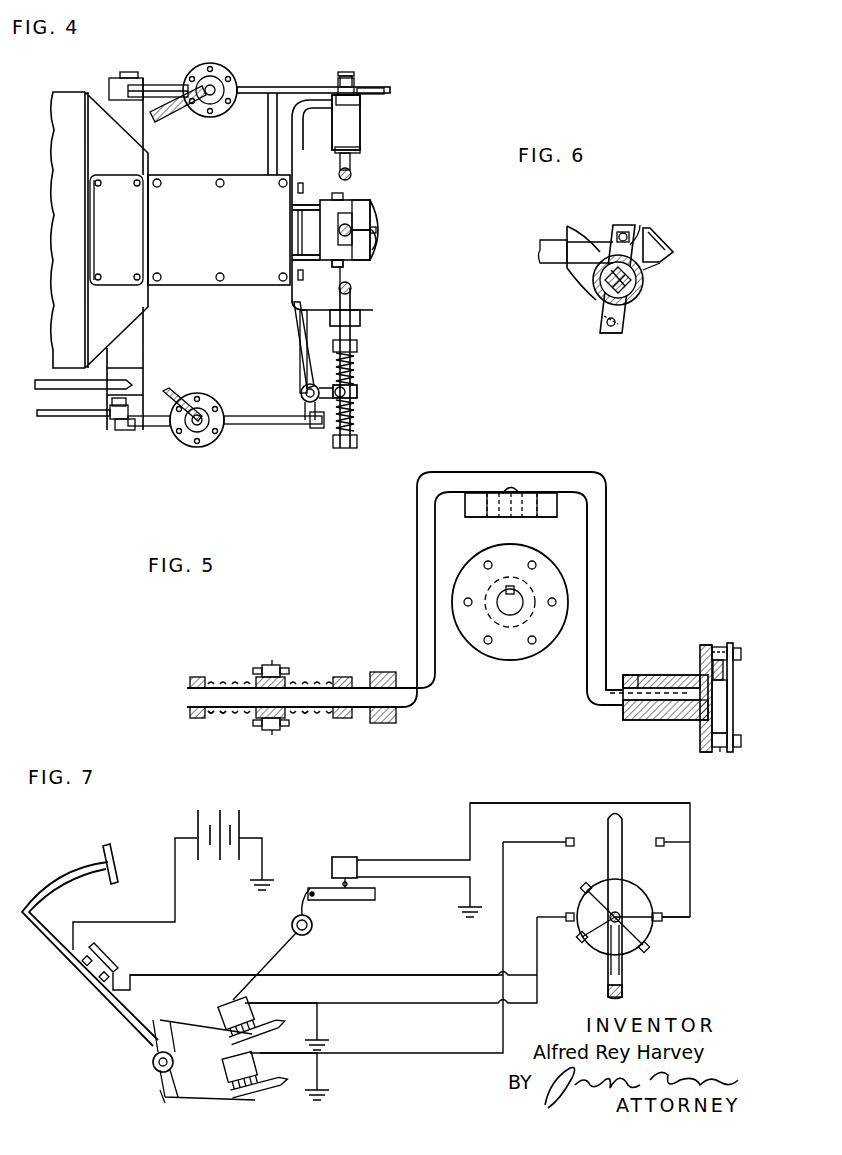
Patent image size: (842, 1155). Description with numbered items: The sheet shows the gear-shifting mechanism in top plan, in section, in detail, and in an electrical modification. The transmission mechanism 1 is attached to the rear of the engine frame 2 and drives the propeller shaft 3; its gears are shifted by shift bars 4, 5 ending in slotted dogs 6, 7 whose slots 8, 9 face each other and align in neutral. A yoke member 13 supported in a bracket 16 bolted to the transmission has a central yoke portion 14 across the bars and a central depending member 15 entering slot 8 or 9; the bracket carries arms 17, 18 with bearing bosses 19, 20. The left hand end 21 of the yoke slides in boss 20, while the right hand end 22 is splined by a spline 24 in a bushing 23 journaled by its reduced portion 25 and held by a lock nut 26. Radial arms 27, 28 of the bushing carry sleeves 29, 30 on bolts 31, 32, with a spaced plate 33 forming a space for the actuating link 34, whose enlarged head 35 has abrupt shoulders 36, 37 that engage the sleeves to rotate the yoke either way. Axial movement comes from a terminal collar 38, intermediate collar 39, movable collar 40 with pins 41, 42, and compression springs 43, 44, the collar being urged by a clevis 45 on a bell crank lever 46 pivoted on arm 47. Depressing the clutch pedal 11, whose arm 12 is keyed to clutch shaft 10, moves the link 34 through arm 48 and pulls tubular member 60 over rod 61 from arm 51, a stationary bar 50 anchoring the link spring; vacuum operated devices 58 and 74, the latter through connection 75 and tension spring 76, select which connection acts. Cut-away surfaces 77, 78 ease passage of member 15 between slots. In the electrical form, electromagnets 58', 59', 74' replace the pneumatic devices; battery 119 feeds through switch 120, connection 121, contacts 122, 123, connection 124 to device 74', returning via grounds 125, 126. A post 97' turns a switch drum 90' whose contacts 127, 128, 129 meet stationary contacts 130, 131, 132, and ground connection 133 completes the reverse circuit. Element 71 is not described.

In FIG. 4, the transmission mechanism 1 is at (200, 322).
In FIG. 4, the engine frame 2 is at (70, 92).
In FIG. 4, the propeller shaft 3 is at (368, 205).
In FIG. 5, the propeller shaft 3 is at (515, 660).
In FIG. 4, the shift bar 4 is at (320, 200).
In FIG. 4, the shift bar 5 is at (345, 268).
In FIG. 4, the slotted dog 6 is at (370, 213).
In FIG. 5, the slotted dog 6 is at (550, 518).
In FIG. 4, the slotted dog 7 is at (368, 255).
In FIG. 5, the slotted dog 7 is at (470, 518).
In FIG. 4, the slot 8 is at (350, 213).
In FIG. 5, the slot 8 is at (530, 518).
In FIG. 4, the slot 9 is at (352, 272).
In FIG. 5, the slot 9 is at (488, 520).
In FIG. 4, the clutch shaft 10 is at (120, 432).
In FIG. 7, the clutch shaft 10 is at (155, 1066).
In FIG. 7, the clutch pedal 11 is at (105, 850).
In FIG. 4, the arm 12 is at (50, 420).
In FIG. 7, the arm 12 is at (92, 1000).
In FIG. 4, the yoke member 13 is at (352, 333).
In FIG. 5, the yoke member 13 is at (607, 566).
In FIG. 5, the central yoke portion 14 is at (540, 472).
In FIG. 4, the central depending member 15 is at (375, 230).
In FIG. 5, the central depending member 15 is at (508, 488).
In FIG. 4, the bracket 16 is at (296, 318).
In FIG. 6, the bracket 16 is at (588, 228).
In FIG. 4, the arm 17 is at (308, 135).
In FIG. 4, the arm 18 is at (292, 306).
In FIG. 4, the bearing boss 19 is at (360, 130).
In FIG. 6, the bearing boss 19 is at (640, 290).
In FIG. 5, the bearing boss 19 is at (655, 675).
In FIG. 4, the bearing boss 20 is at (360, 318).
In FIG. 5, the bearing boss 20 is at (382, 671).
In FIG. 4, the left hand end 21 is at (339, 170).
In FIG. 5, the left hand end 21 is at (320, 712).
In FIG. 4, the right hand end 22 is at (352, 290).
In FIG. 6, the right hand end 22 is at (638, 283).
In FIG. 5, the right hand end 22 is at (623, 713).
In FIG. 4, the bushing 23 is at (360, 110).
In FIG. 6, the bushing 23 is at (628, 298).
In FIG. 5, the bushing 23 is at (700, 670).
In FIG. 6, the spline 24 is at (600, 298).
In FIG. 5, the spline 24 is at (714, 688).
In FIG. 5, the reduced portion 25 is at (640, 722).
In FIG. 4, the lock nut 26 is at (360, 150).
In FIG. 5, the lock nut 26 is at (625, 686).
In FIG. 6, the radial arm 27 is at (615, 328).
In FIG. 5, the radial arm 27 is at (706, 753).
In FIG. 4, the radial arm 28 is at (360, 100).
In FIG. 6, the radial arm 28 is at (632, 235).
In FIG. 5, the radial arm 28 is at (705, 644).
In FIG. 6, the sleeve 29 is at (598, 335).
In FIG. 5, the sleeve 29 is at (720, 752).
In FIG. 4, the sleeve 30 is at (356, 85).
In FIG. 6, the sleeve 30 is at (620, 230).
In FIG. 5, the sleeve 30 is at (720, 646).
In FIG. 6, the bolt 31 is at (612, 336).
In FIG. 5, the bolt 31 is at (742, 741).
In FIG. 6, the bolt 32 is at (628, 232).
In FIG. 5, the bolt 32 is at (742, 654).
In FIG. 4, the spaced plate 33 is at (338, 80).
In FIG. 5, the spaced plate 33 is at (734, 706).
In FIG. 4, the actuating link 34 is at (255, 86).
In FIG. 6, the actuating link 34 is at (548, 264).
In FIG. 5, the actuating link 34 is at (730, 650).
In FIG. 7, the actuating link 34 is at (358, 900).
In FIG. 4, the enlarged head 35 is at (374, 88).
In FIG. 6, the enlarged head 35 is at (673, 250).
In FIG. 6, the abrupt shoulder 36 is at (645, 228).
In FIG. 6, the abrupt shoulder 37 is at (655, 266).
In FIG. 4, the terminal collar 38 is at (352, 448).
In FIG. 5, the terminal collar 38 is at (192, 676).
In FIG. 4, the intermediate collar 39 is at (357, 344).
In FIG. 5, the intermediate collar 39 is at (340, 676).
In FIG. 4, the movable collar 40 is at (358, 388).
In FIG. 5, the movable collar 40 is at (286, 678).
In FIG. 4, the pin 41 is at (358, 404).
In FIG. 5, the pin 41 is at (265, 665).
In FIG. 5, the pin 42 is at (266, 731).
In FIG. 4, the compression spring 43 is at (357, 420).
In FIG. 5, the compression spring 43 is at (220, 718).
In FIG. 4, the compression spring 44 is at (357, 365).
In FIG. 5, the compression spring 44 is at (305, 720).
In FIG. 4, the clevis 45 is at (338, 398).
In FIG. 5, the clevis 45 is at (280, 665).
In FIG. 4, the bell crank lever 46 is at (304, 384).
In FIG. 4, the arm 47 is at (302, 352).
In FIG. 4, the arm 48 is at (118, 76).
In FIG. 4, the stationary bar 50 is at (268, 145).
In FIG. 4, the arm 51 is at (110, 410).
In FIG. 4, the vacuum operated device 58 is at (178, 439).
In FIG. 7, the electromagnet 58' is at (244, 1015).
In FIG. 7, the electromagnet 59' is at (252, 1071).
In FIG. 4, the hollow tubular member 60 is at (150, 430).
In FIG. 4, the rod 61 is at (270, 426).
In FIG. 4, the arm 71 is at (160, 392).
In FIG. 4, the vacuum operated device 74 is at (206, 71).
In FIG. 7, the electromagnet 74' is at (511, 855).
In FIG. 4, the connection 75 is at (175, 120).
In FIG. 4, the tension spring 76 is at (312, 240).
In FIG. 4, the lower surface 77 is at (312, 213).
In FIG. 4, the lower right hand surface 78 is at (378, 236).
In FIG. 7, the switch drum 90' is at (657, 911).
In FIG. 7, the post 97' is at (648, 906).
In FIG. 7, the battery 119 is at (196, 818).
In FIG. 7, the switch 120 is at (105, 953).
In FIG. 7, the connection 121 is at (383, 975).
In FIG. 7, the contact 122 is at (660, 925).
In FIG. 7, the stationary contact 123 is at (666, 922).
In FIG. 7, the connection 124 is at (518, 803).
In FIG. 7, the ground 125 is at (480, 910).
In FIG. 7, the ground 126 is at (245, 880).
In FIG. 7, the contact 127 is at (650, 950).
In FIG. 7, the contact 128 is at (578, 940).
In FIG. 7, the contact 129 is at (584, 884).
In FIG. 7, the stationary contact 130 is at (568, 913).
In FIG. 7, the stationary contact 131 is at (655, 841).
In FIG. 7, the stationary contact 132 is at (587, 826).
In FIG. 7, the ground connection 133 is at (325, 1097).